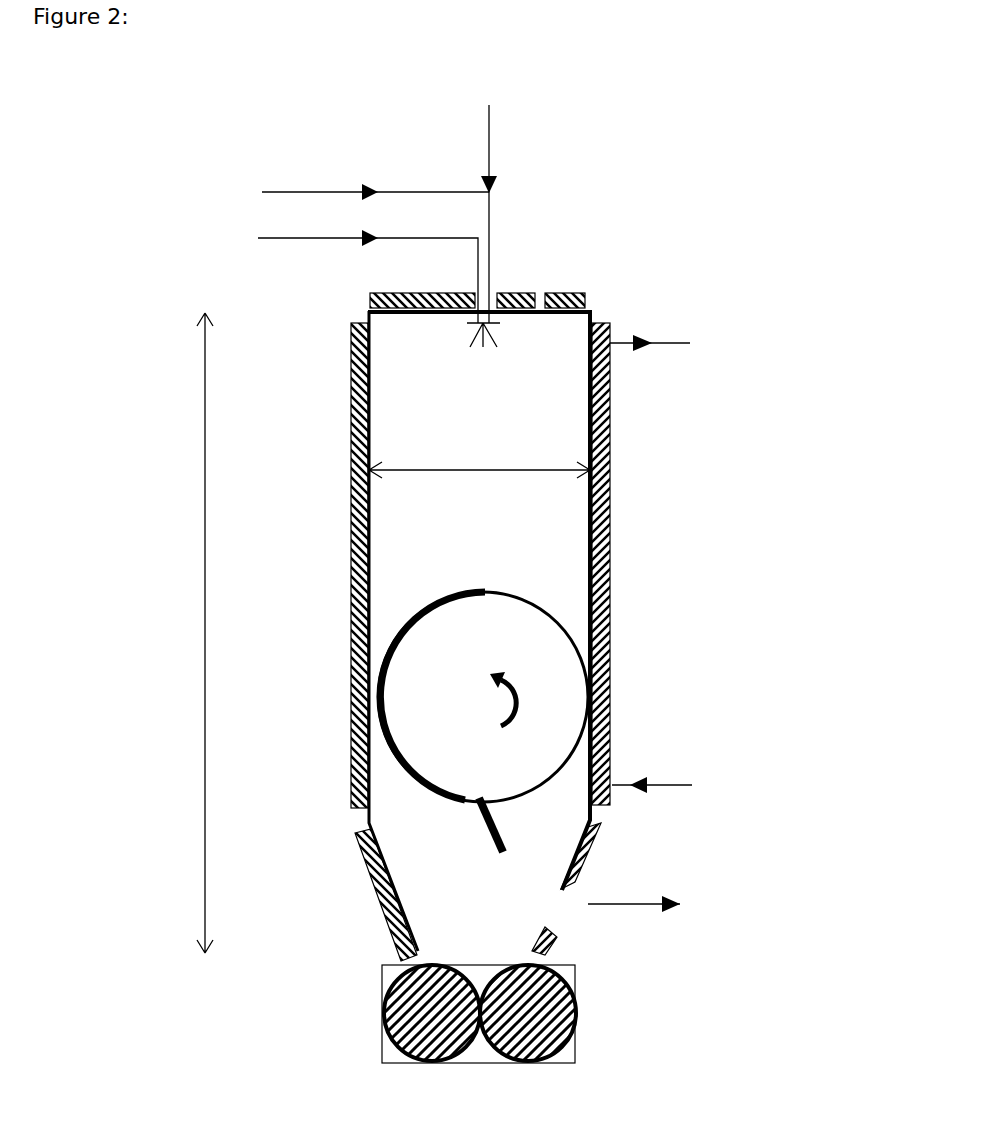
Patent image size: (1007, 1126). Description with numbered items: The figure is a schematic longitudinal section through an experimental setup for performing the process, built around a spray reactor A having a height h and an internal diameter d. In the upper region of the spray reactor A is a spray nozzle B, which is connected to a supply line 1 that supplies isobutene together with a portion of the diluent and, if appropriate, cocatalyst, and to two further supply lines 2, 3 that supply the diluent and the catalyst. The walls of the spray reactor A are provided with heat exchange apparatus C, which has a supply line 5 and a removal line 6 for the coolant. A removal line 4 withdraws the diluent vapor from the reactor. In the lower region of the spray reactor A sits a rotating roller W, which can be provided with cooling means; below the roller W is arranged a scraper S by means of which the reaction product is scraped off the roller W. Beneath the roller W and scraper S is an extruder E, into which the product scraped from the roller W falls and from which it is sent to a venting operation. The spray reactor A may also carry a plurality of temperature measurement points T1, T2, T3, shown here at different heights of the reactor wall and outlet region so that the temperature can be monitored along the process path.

The supply line 1 is at (368, 276).
The supply line 2 is at (375, 175).
The supply line 3 is at (474, 214).
The removal line 4 is at (658, 912).
The supply line 5 is at (652, 762).
The removal line 6 is at (650, 367).
The spray reactor A is at (465, 500).
The spray nozzle B is at (465, 349).
The heat exchange apparatus C is at (612, 518).
The internal diameter d is at (479, 454).
The extruder E is at (412, 1015).
The height h is at (221, 633).
The scraper S is at (508, 850).
The temperature measurement point T1 is at (408, 400).
The temperature measurement point T2 is at (407, 833).
The temperature measurement point T3 is at (418, 872).
The rotating roller W is at (563, 698).